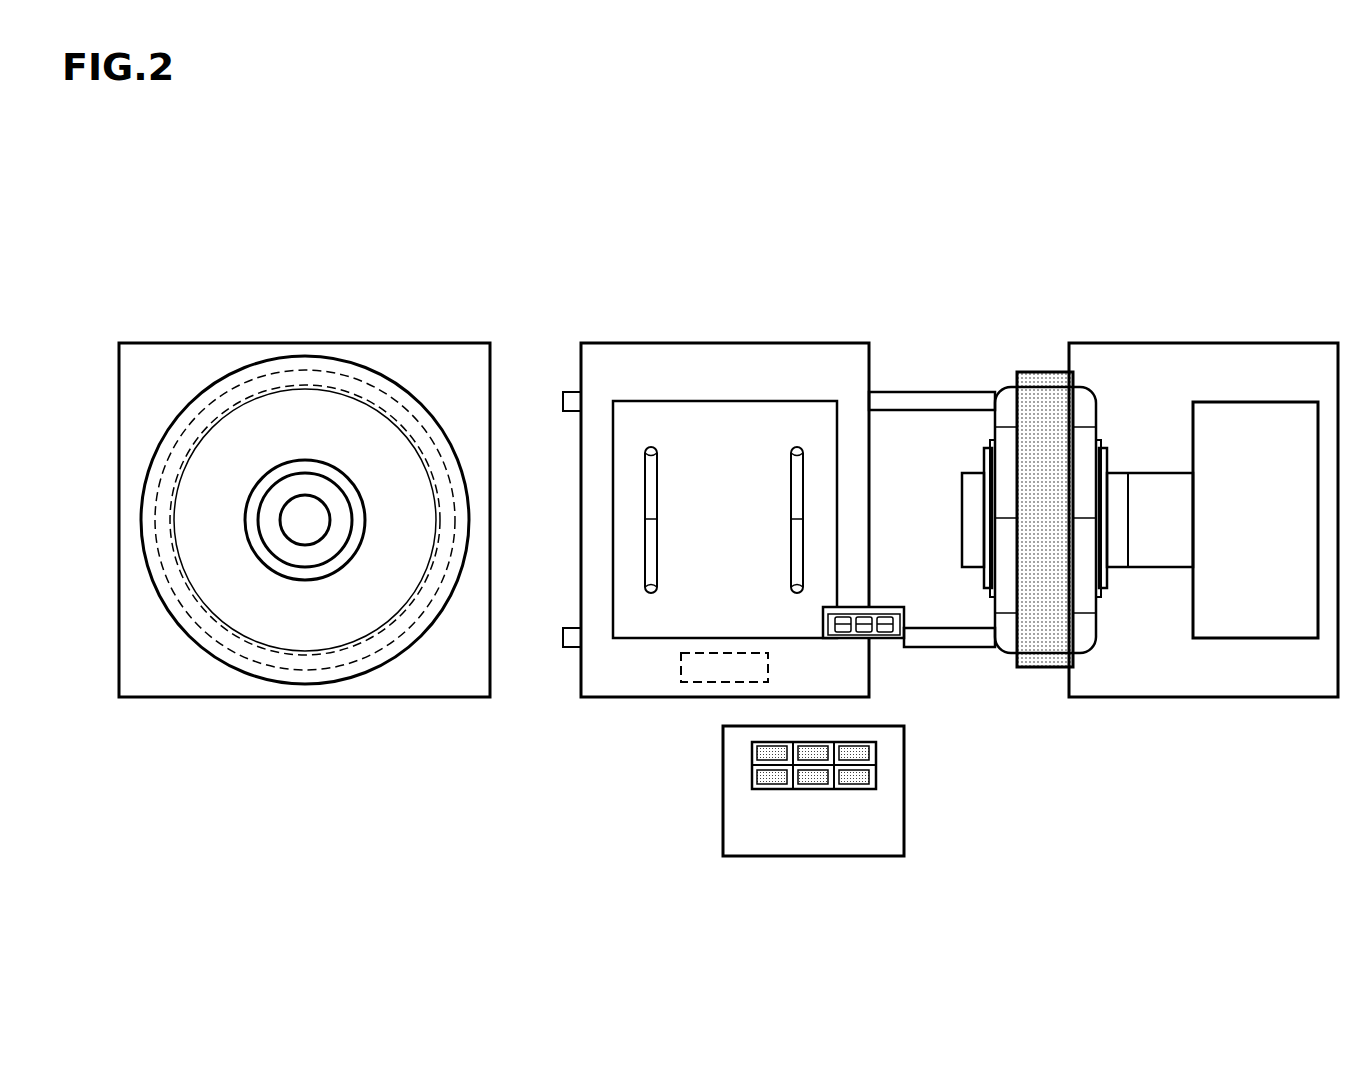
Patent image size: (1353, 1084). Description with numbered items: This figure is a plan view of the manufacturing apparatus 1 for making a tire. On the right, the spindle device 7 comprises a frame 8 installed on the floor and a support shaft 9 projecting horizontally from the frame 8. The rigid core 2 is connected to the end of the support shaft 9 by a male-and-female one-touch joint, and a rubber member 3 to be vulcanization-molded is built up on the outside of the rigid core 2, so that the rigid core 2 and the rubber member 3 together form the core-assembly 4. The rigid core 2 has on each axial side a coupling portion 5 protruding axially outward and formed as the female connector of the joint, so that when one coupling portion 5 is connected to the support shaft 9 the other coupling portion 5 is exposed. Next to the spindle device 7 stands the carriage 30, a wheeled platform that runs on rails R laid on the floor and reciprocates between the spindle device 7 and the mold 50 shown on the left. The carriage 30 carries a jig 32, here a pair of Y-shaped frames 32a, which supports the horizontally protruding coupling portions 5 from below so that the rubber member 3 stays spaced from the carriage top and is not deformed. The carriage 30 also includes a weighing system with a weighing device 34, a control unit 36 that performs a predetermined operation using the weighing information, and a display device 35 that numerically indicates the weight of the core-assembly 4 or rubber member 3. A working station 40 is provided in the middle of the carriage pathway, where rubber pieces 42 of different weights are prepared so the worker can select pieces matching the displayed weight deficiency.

The manufacturing apparatus 1 is at (900, 215).
The rigid core 2 is at (1083, 627).
The rubber member 3 is at (1045, 640).
The core-assembly 4 is at (1026, 815).
The coupling portion 5 is at (972, 530).
The spindle device 7 is at (1135, 232).
The frame 8 is at (1252, 453).
The support shaft 9 is at (1161, 512).
The rails R is at (937, 405).
The carriage 30 is at (648, 305).
The jig 32 is at (837, 248).
The Y-shaped frame 32a is at (660, 440).
The weighing device 34 is at (628, 624).
The display device 35 is at (823, 622).
The control unit 36 is at (717, 670).
The working station 40 is at (733, 836).
The rubber pieces 42 is at (770, 778).
The mold 50 is at (295, 305).